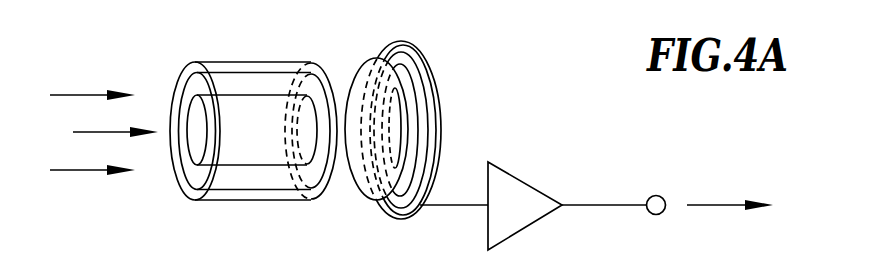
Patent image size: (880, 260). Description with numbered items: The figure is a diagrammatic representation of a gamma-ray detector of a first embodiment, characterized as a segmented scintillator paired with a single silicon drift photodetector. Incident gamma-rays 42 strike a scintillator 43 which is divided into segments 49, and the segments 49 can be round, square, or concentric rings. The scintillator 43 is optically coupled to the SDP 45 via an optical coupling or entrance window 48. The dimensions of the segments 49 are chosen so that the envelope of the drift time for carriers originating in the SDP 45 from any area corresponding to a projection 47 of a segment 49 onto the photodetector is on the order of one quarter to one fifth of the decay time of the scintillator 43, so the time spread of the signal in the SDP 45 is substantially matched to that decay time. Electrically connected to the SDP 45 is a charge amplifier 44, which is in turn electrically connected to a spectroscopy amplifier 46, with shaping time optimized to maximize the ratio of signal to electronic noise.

The incident gamma-rays 42 is at (107, 132).
The scintillator 43 is at (150, 61).
The charge amplifier 44 is at (516, 184).
The SDP 45 is at (460, 86).
The spectroscopy amplifier 46 is at (717, 205).
The projection of a segment 47 is at (398, 90).
The optical coupling or entrance window 48 is at (372, 60).
The segments 49 is at (193, 142).